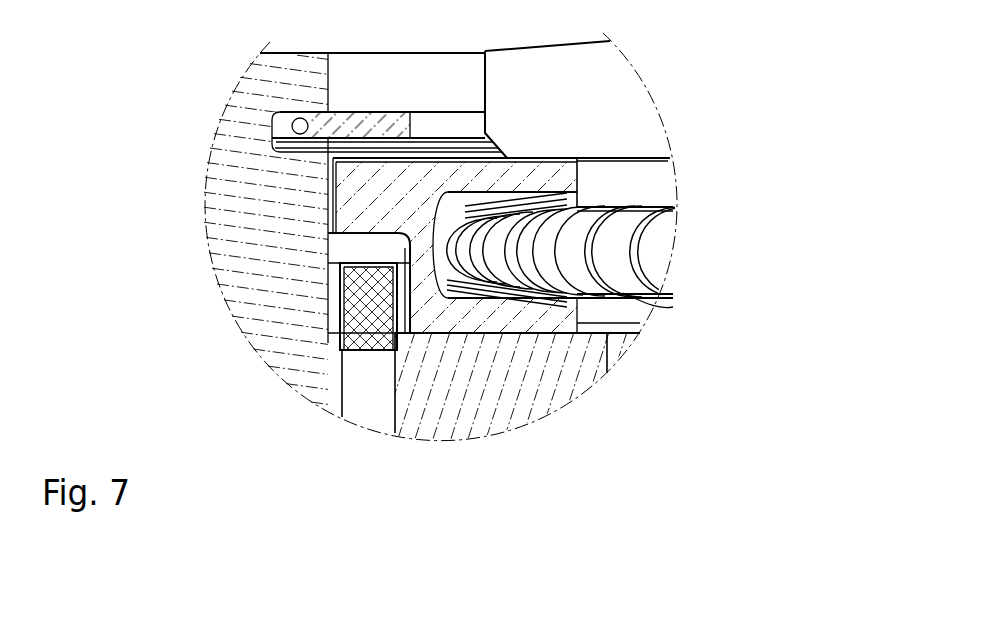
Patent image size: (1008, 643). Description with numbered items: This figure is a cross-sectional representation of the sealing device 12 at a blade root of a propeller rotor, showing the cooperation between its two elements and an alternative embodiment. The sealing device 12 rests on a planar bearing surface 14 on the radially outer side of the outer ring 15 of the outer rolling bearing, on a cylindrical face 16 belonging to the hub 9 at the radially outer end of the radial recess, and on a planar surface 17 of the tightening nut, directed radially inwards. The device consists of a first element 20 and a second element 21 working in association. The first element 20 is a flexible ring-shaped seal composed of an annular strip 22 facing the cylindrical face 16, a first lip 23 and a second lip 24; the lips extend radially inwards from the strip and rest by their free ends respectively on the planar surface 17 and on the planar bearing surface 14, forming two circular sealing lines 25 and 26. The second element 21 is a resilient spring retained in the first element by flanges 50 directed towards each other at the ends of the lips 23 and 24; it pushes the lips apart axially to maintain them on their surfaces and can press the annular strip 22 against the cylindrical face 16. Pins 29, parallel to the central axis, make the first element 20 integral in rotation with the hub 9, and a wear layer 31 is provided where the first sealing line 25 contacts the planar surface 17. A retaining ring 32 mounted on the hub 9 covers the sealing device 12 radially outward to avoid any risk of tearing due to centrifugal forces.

The hub 9 is at (253, 235).
The sealing device 12 is at (362, 392).
The planar bearing surface 14 is at (460, 318).
The outer ring 15 is at (532, 398).
The cylindrical face 16 is at (328, 183).
The planar surface 17 is at (628, 164).
The first element 20 is at (633, 163).
The second element 21 is at (687, 237).
The annular strip 22 is at (352, 217).
The first lip 23 is at (527, 178).
The second lip 24 is at (606, 331).
The first sealing line 25 is at (577, 162).
The second sealing line 26 is at (570, 334).
The pin 29 is at (378, 256).
The wear layer 31 is at (583, 150).
The retaining ring 32 is at (259, 125).
The flanges 50 is at (645, 322).